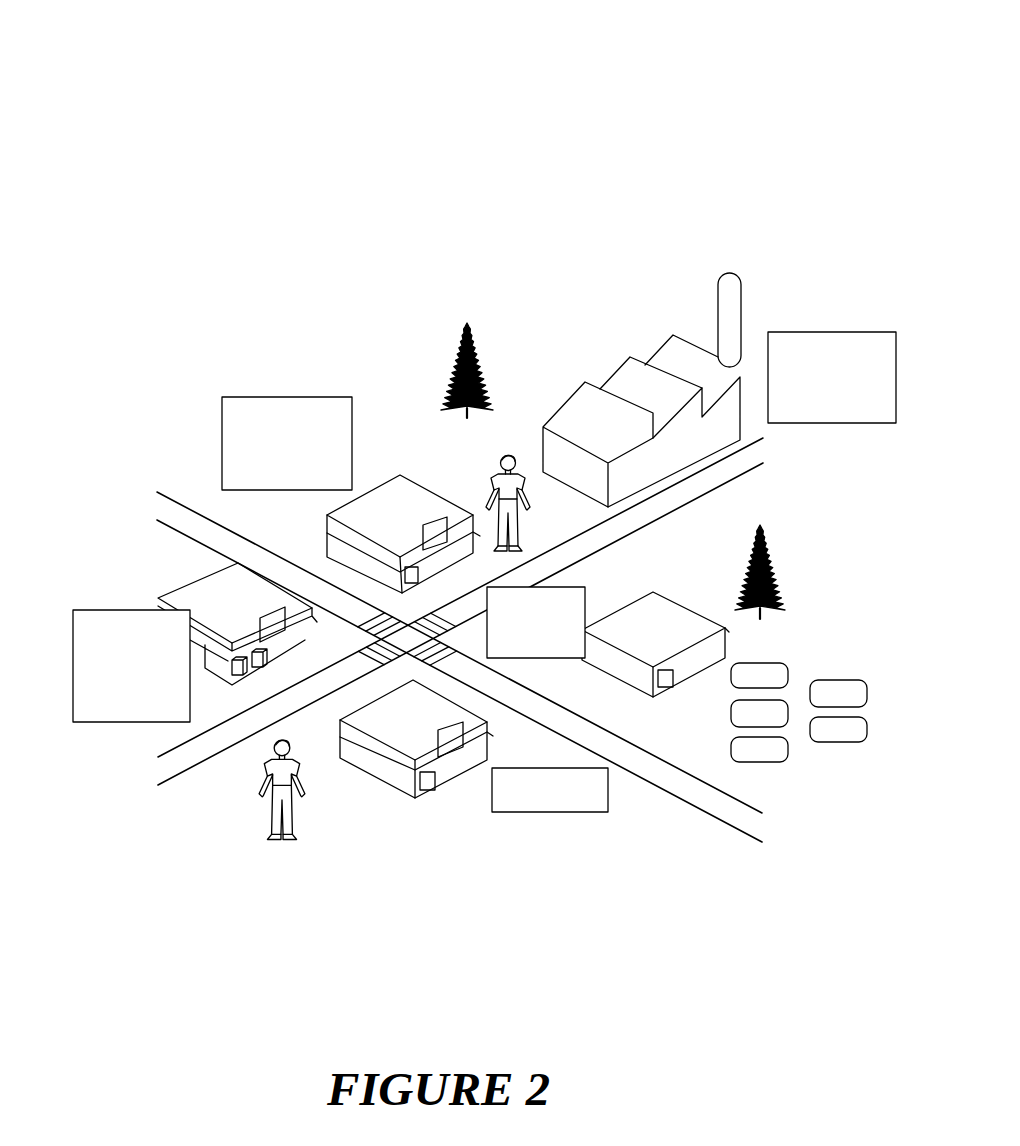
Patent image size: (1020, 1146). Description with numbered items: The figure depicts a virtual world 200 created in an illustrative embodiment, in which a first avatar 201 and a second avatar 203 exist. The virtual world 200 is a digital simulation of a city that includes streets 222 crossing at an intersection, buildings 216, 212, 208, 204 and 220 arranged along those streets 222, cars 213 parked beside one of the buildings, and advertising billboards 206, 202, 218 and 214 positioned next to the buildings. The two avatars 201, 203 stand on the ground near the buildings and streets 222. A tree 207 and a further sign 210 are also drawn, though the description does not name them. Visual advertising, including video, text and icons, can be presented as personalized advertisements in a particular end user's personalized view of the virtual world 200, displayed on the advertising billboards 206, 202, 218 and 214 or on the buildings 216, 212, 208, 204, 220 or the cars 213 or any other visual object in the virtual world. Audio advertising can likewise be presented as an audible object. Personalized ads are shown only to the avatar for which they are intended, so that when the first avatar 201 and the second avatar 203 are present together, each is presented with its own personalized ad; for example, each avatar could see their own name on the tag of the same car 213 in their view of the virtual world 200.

The virtual world 200 is at (393, 137).
The first avatar 201 is at (270, 790).
The advertising billboard 202 is at (252, 397).
The second avatar 203 is at (503, 472).
The building 204 is at (380, 490).
The advertising billboard 206 is at (837, 332).
The tree 207 is at (473, 350).
The building 208 is at (568, 397).
The Mc B's Honda sign 210 is at (580, 587).
The building 212 is at (693, 618).
The cars 213 is at (822, 683).
The advertising billboard 214 is at (600, 807).
The building 216 is at (403, 745).
The advertising billboard 218 is at (108, 608).
The building 220 is at (212, 578).
The streets 222 is at (227, 747).